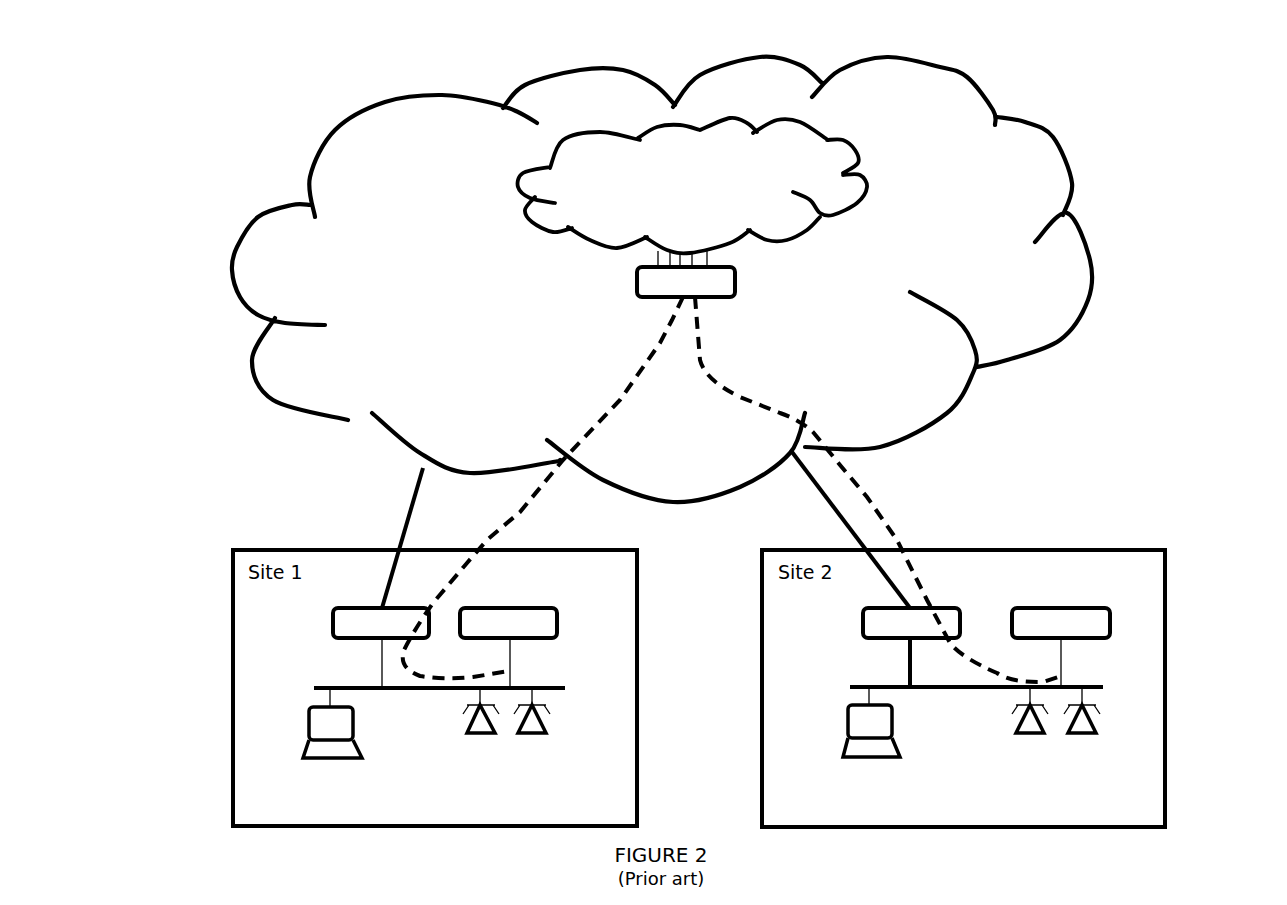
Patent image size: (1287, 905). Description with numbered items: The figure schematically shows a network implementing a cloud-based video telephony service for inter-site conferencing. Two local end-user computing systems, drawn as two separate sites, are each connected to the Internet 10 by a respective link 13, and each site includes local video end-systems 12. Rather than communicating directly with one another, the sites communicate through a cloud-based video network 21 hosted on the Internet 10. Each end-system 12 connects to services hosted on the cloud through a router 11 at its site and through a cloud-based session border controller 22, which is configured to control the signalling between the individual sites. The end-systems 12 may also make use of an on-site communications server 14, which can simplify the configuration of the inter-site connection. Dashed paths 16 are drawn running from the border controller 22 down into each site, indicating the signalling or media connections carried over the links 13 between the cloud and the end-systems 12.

The Internet 10 is at (238, 292).
The cloud-based video network 21 is at (527, 197).
The cloud-based session border controller 22 is at (637, 288).
The tunnel connection 16 is at (520, 512).
The link 13 is at (402, 515).
The router 11 is at (333, 627).
The on-site communications server 14 is at (557, 629).
The local video end-system 12 is at (548, 723).